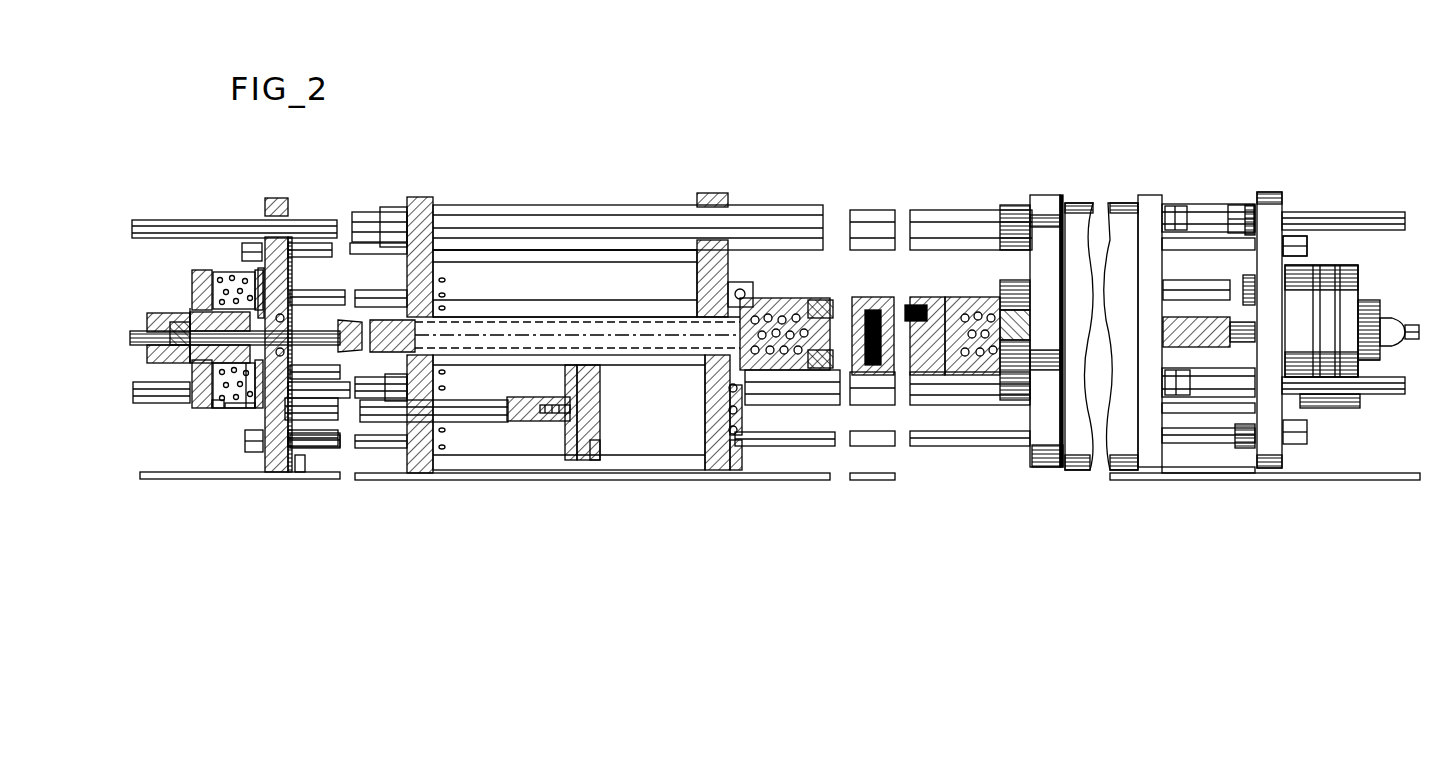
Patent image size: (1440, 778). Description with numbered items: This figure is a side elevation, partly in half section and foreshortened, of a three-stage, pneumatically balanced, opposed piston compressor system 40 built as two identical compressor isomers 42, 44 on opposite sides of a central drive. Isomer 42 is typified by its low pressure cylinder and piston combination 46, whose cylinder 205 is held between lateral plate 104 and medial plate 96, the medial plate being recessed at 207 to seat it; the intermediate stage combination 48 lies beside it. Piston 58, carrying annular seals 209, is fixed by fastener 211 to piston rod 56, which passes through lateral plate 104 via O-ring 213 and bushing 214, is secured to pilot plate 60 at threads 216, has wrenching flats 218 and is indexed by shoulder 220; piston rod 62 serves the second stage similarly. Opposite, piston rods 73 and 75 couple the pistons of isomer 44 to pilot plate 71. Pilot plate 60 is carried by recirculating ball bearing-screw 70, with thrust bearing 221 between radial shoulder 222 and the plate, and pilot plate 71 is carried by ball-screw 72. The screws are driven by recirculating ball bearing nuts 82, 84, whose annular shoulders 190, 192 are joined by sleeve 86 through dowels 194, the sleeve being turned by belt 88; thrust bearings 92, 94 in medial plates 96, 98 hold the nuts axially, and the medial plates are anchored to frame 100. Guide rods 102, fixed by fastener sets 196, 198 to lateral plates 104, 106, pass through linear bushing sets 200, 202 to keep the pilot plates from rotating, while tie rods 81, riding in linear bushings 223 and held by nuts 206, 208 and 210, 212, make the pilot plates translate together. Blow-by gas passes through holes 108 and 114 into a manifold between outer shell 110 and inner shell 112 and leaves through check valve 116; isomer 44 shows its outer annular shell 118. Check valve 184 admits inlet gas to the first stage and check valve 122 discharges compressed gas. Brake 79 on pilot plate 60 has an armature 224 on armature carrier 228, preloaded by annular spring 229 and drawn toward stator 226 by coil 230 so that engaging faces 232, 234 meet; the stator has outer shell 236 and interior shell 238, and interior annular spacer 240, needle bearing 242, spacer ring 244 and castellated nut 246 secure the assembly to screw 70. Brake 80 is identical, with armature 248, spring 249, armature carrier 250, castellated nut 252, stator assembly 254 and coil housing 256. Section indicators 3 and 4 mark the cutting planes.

The compressor system 40 is at (955, 210).
The compressor isomer 42 is at (573, 242).
The compressor isomer 44 is at (1120, 205).
The low pressure stage cylinder and piston combination 46 is at (525, 440).
The intermediate pressure stage cylinder and piston combination 48 is at (585, 265).
The piston rod 56 is at (320, 472).
The piston 58 is at (572, 412).
The pilot plate 60 is at (278, 472).
The piston rod 62 is at (383, 295).
The recirculating ball bearing-screw 70 is at (570, 320).
The pilot plate 71 is at (1268, 205).
The recirculating ball-screw 72 is at (965, 298).
The piston rod 73 is at (1230, 445).
The piston rod 75 is at (1185, 300).
The brake 79 is at (240, 407).
The brake 80 is at (1345, 282).
The tie rods 81 is at (328, 244).
The recirculating ball bearing nut 82 is at (760, 380).
The recirculating ball bearing nut 84 is at (962, 378).
The sleeve 86 is at (895, 298).
The belt 88 is at (918, 297).
The thrust bearing 92 is at (742, 395).
The thrust bearing 94 is at (1020, 375).
The medial plate 96 is at (718, 470).
The medial plate 98 is at (1045, 468).
The frame 100 is at (1190, 480).
The guide rods 102 is at (243, 220).
The lateral plate 104 is at (425, 475).
The lateral plate 106 is at (1155, 472).
The holes 108 is at (448, 372).
The outer shell 110 is at (660, 208).
The inner shell 112 is at (668, 315).
The holes 114 is at (447, 280).
The check valve 116 is at (440, 230).
The outer annular shell 118 is at (1080, 214).
The check valve 122 is at (730, 412).
The check valve 184 is at (730, 390).
The annular shoulder 190 is at (806, 298).
The annular shoulder 192 is at (1050, 470).
The dowels 194 is at (815, 300).
The fastener set 196 is at (395, 212).
The fastener set 198 is at (1173, 206).
The linear bushing set 200 is at (300, 244).
The linear bushing set 202 is at (1290, 212).
The cylinder 205 is at (640, 455).
The nut 206 is at (258, 452).
The recess 207 is at (738, 455).
The nut 208 is at (290, 475).
The annular seals 209 is at (590, 460).
The nut 210 is at (1252, 205).
The fastener 211 is at (580, 395).
The nut 212 is at (1310, 246).
The O-ring 213 is at (448, 388).
The bushing 214 is at (448, 430).
The threads 216 is at (390, 448).
The wrenching flats 218 is at (330, 375).
The shoulder 220 is at (218, 408).
The thrust bearing 221 is at (246, 408).
The radial shoulder 222 is at (300, 420).
The linear bushing 223 is at (838, 446).
The armature 224 is at (170, 316).
The stator 226 is at (220, 403).
The armature carrier 228 is at (150, 345).
The annular spring 229 is at (195, 315).
The coil 230 is at (200, 408).
The engaging face 232 is at (195, 372).
The engaging face 234 is at (165, 398).
The outer shell 236 is at (195, 272).
The interior shell 238 is at (230, 272).
The interior annular spacer 240 is at (260, 268).
The needle bearing 242 is at (268, 240).
The spacer ring 244 is at (312, 244).
The castellated nut 246 is at (175, 325).
The armature 248 is at (1362, 270).
The spring 249 is at (1372, 360).
The armature carrier 250 is at (1372, 305).
The castellated nut 252 is at (1390, 318).
The stator assembly 254 is at (1345, 265).
The coil housing 256 is at (1322, 280).
The section line 3 is at (470, 200).
The section line 4 is at (894, 174).